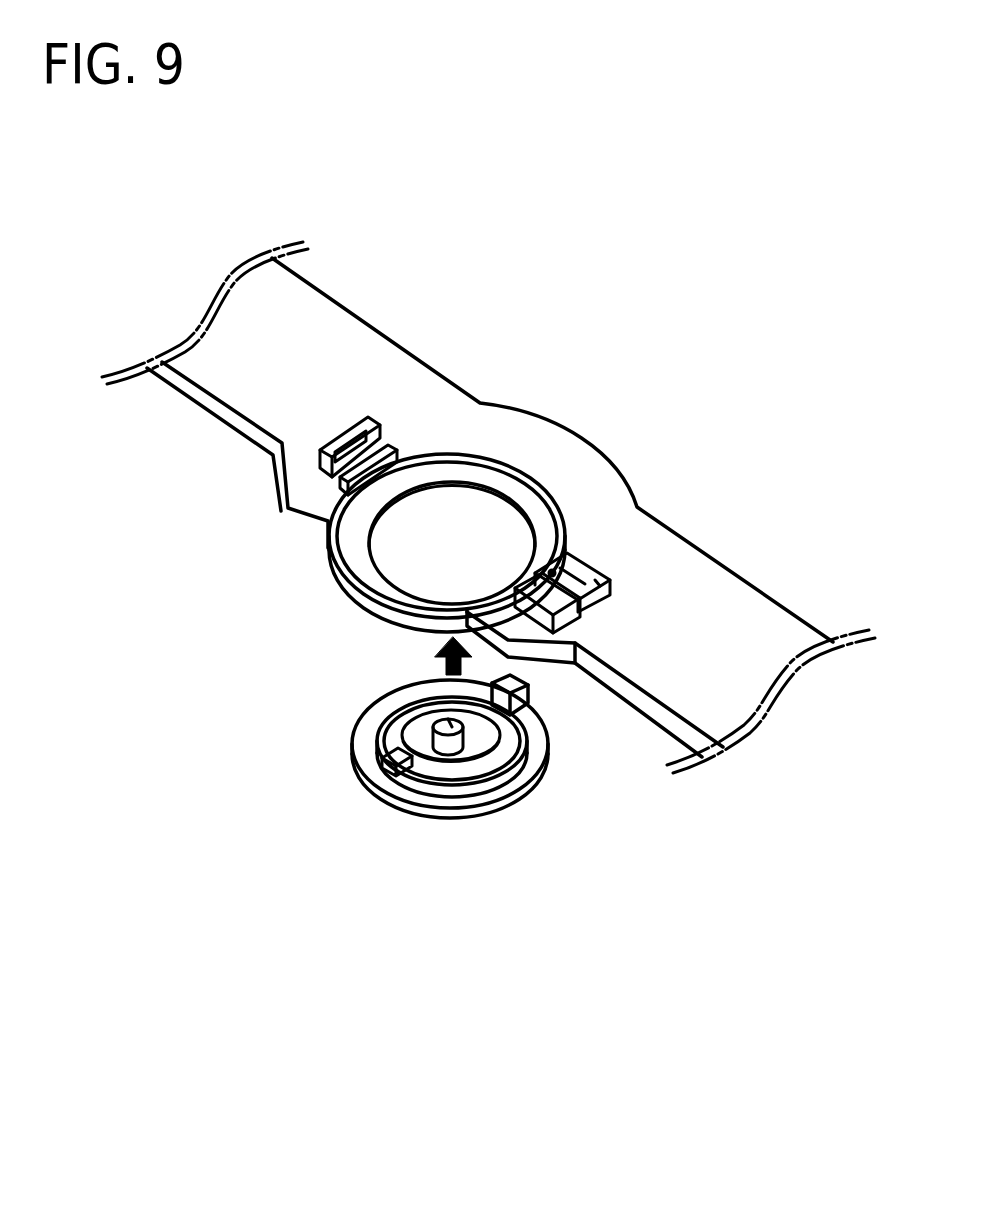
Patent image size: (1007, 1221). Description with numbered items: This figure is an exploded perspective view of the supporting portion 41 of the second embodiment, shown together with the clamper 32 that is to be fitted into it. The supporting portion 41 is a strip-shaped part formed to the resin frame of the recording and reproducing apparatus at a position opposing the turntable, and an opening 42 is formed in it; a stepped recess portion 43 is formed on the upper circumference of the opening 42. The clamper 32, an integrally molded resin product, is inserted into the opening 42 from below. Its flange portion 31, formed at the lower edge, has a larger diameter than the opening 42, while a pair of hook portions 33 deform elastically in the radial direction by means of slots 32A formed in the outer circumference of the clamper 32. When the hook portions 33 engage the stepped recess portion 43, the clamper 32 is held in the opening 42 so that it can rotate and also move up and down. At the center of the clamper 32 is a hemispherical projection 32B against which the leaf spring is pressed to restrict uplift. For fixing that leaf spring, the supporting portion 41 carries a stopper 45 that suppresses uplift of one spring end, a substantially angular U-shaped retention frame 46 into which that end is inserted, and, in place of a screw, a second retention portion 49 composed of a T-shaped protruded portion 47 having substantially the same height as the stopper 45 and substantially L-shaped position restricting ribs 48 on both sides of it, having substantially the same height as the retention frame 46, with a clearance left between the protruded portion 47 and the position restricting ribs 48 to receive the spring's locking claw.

The flange portion 31 is at (503, 793).
The clamper 32 is at (385, 866).
The slots 32A is at (428, 745).
The hemispherical projection 32B is at (448, 724).
The hook portions 33 is at (381, 768).
The supporting portion 41 is at (297, 322).
The opening 42 is at (470, 525).
The stepped recess portion 43 is at (545, 503).
The stopper 45 is at (365, 463).
The retention frame 46 is at (322, 470).
The protruded portion 47 is at (542, 555).
The position restricting rib 48 is at (603, 578).
The second retention portion 49 is at (700, 522).